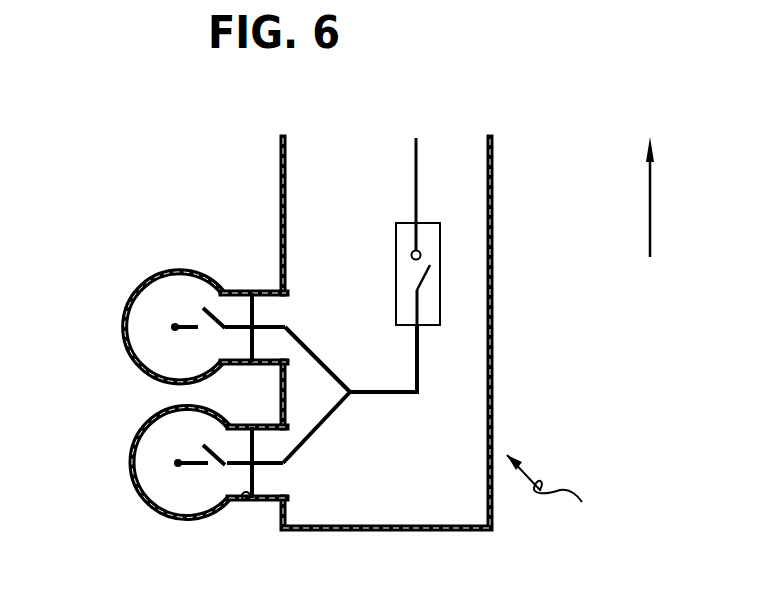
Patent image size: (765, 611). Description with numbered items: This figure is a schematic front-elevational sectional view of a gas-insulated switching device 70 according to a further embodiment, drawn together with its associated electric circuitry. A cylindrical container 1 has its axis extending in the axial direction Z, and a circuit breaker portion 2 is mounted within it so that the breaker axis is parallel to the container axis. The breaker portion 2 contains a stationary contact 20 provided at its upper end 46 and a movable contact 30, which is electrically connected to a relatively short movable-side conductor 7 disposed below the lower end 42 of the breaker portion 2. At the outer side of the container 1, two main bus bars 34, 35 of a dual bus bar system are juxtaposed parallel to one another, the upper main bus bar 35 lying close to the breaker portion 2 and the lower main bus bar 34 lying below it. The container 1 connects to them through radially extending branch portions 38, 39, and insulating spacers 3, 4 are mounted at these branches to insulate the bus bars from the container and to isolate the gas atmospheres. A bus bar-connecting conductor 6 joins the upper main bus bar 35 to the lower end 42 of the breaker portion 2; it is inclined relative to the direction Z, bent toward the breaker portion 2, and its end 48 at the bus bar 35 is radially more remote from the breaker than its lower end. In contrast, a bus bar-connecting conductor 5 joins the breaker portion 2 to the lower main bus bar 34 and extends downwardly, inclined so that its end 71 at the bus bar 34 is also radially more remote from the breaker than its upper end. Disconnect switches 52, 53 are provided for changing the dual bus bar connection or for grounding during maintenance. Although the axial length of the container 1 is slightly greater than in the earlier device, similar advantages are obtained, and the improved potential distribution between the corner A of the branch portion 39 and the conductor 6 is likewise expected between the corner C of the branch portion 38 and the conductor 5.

The cylindrical container 1 is at (491, 153).
The circuit breaker portion 2 is at (441, 302).
The insulating spacer 3 is at (240, 501).
The insulating spacer 4 is at (233, 295).
The bus bar-connecting conductor 5 is at (285, 462).
The bus bar-connecting conductor 6 is at (325, 360).
The movable-side conductor 7 is at (418, 380).
The stationary contact 20 is at (420, 243).
The movable contact 30 is at (440, 273).
The main bus bar 34 is at (170, 472).
The main bus bar 35 is at (150, 282).
The cylindrical extension 38 is at (263, 503).
The cylindrical extension 39 is at (267, 367).
The lower end of breaker portion 42 is at (418, 330).
The upper end of breaker portion 46 is at (413, 221).
The end of bus bar-connecting conductor 48 is at (283, 328).
The disconnect switch 52 is at (213, 465).
The disconnect switch 53 is at (205, 335).
The gas-insulated switching device 70 is at (563, 499).
The end of bus bar-connecting conductor 71 is at (285, 467).
The corner of branch portion A is at (287, 362).
The corner of branch portion C is at (305, 440).
The axial direction Z is at (665, 197).